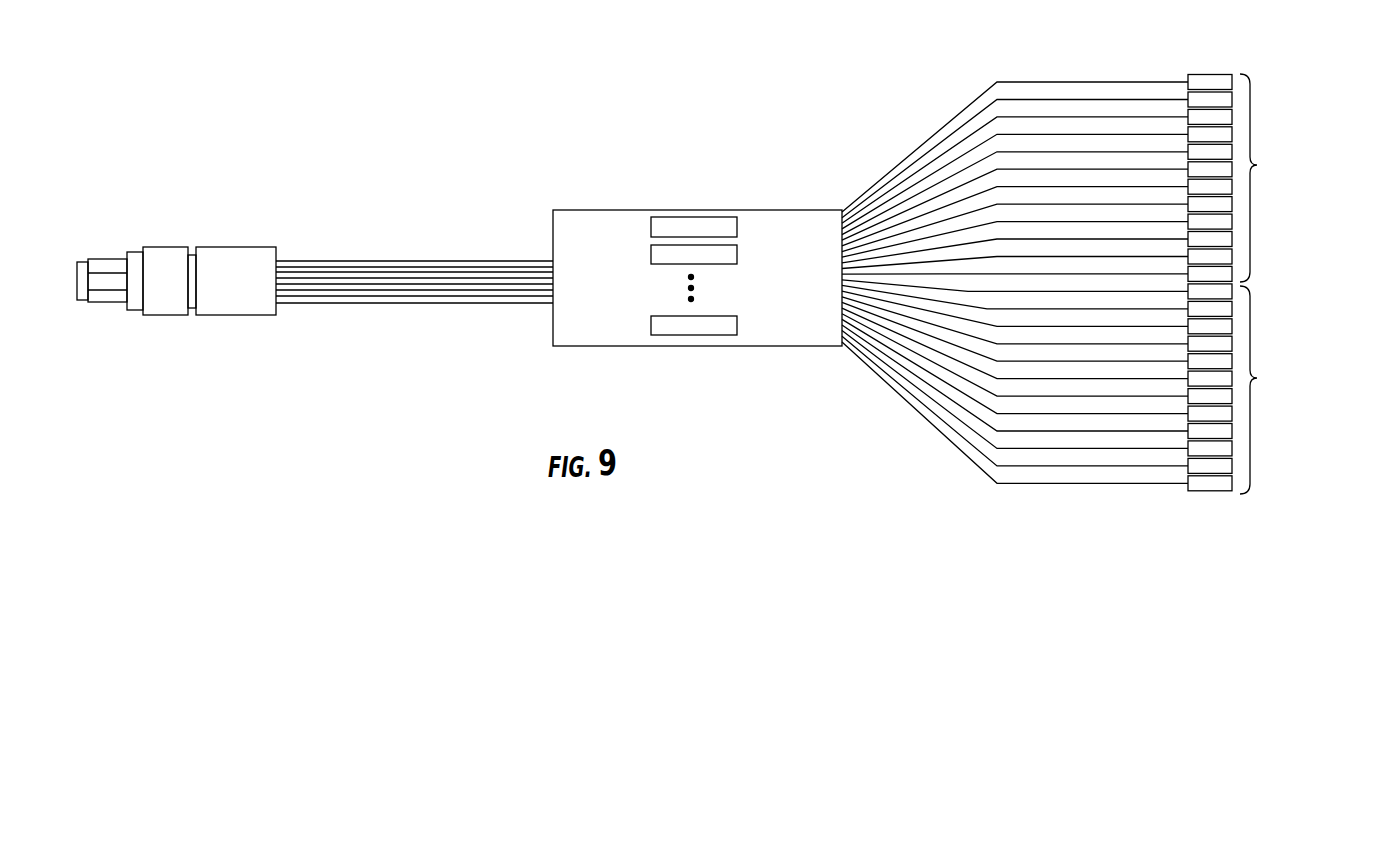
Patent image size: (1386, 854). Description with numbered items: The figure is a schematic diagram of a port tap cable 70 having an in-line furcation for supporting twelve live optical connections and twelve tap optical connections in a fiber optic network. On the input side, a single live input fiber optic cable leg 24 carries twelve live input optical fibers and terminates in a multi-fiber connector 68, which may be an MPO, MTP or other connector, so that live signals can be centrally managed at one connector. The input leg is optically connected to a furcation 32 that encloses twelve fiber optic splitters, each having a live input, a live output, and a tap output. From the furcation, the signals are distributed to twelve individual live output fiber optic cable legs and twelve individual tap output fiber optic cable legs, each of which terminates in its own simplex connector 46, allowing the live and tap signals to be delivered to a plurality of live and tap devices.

The multi-fiber connector 68 is at (165, 315).
The live input fiber optic cable leg 24 is at (412, 241).
The port tap cable 70 is at (697, 244).
The furcation 32 is at (697, 255).
The simplex connector 46 is at (1197, 90).